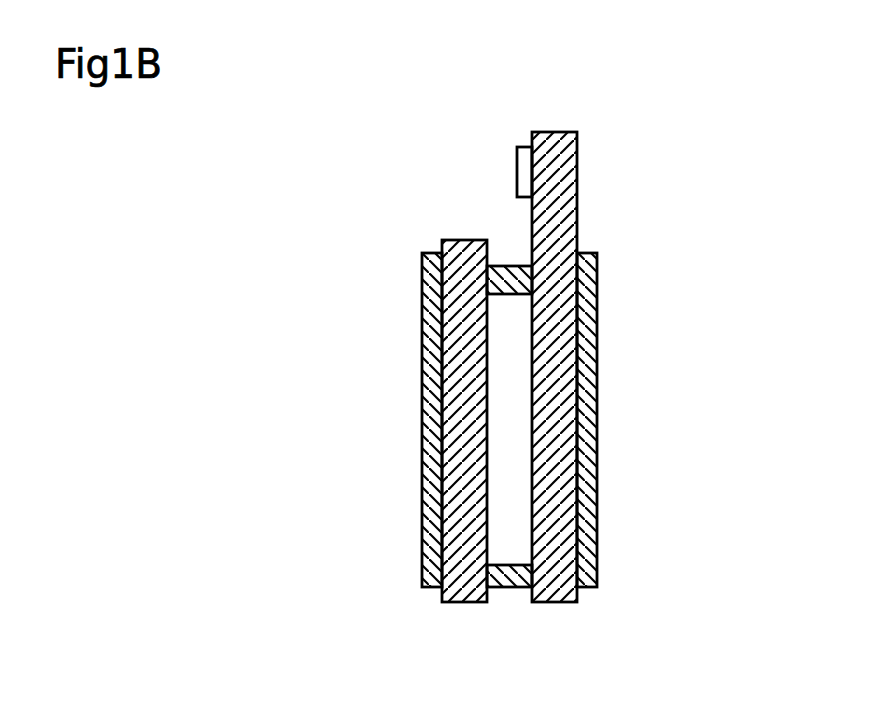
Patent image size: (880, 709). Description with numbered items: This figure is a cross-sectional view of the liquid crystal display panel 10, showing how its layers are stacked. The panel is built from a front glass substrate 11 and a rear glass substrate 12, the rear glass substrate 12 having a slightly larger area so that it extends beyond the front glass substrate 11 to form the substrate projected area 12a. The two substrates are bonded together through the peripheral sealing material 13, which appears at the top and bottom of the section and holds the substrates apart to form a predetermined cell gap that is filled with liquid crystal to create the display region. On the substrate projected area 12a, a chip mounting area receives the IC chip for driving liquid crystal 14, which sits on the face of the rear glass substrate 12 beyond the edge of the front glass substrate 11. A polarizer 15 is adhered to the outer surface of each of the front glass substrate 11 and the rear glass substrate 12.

The liquid crystal display panel 10 is at (638, 94).
The front glass substrate 11 is at (453, 497).
The rear glass substrate 12 is at (573, 327).
The substrate projected area 12a is at (570, 171).
The peripheral sealing material 13 is at (502, 583).
The IC chip for driving liquid crystal 14 is at (524, 181).
The polarizer 15 is at (424, 367).